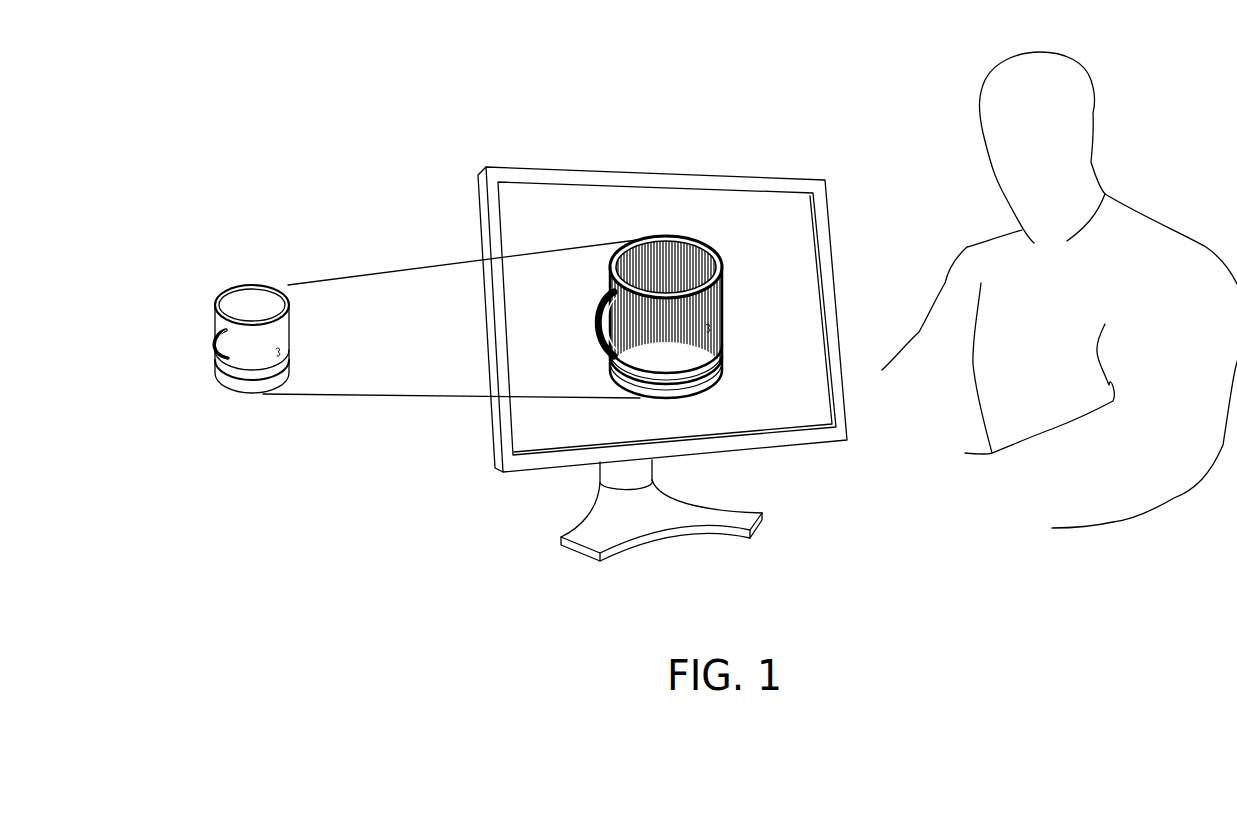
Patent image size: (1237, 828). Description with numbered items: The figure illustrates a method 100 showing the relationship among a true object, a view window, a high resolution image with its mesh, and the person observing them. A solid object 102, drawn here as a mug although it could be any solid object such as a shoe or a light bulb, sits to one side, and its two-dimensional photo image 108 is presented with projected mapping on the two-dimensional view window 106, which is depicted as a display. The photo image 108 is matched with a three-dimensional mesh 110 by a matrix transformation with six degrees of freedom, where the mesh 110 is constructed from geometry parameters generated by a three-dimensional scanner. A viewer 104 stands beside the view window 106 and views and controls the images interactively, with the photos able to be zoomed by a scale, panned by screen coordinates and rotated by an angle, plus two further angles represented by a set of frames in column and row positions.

The method 100 is at (481, 115).
The solid object 102 is at (252, 305).
The viewer 104 is at (977, 117).
The 2D view window 106 is at (486, 217).
The 2D photo image 108 is at (720, 332).
The 3D mesh 110 is at (604, 337).